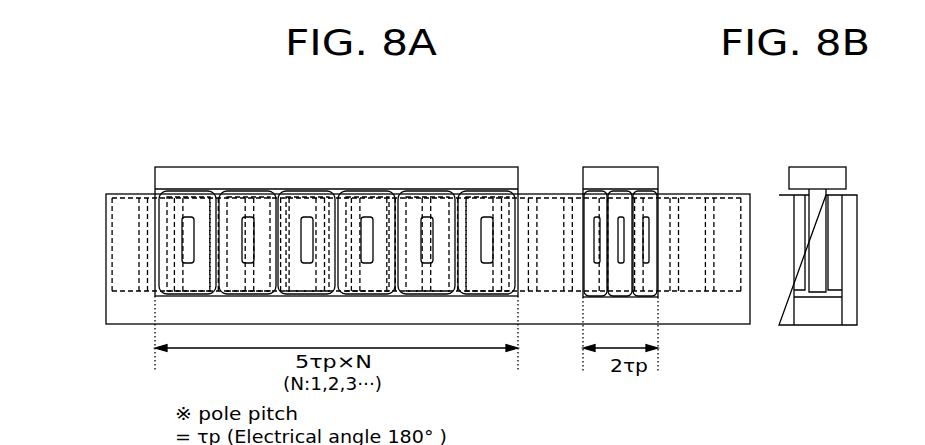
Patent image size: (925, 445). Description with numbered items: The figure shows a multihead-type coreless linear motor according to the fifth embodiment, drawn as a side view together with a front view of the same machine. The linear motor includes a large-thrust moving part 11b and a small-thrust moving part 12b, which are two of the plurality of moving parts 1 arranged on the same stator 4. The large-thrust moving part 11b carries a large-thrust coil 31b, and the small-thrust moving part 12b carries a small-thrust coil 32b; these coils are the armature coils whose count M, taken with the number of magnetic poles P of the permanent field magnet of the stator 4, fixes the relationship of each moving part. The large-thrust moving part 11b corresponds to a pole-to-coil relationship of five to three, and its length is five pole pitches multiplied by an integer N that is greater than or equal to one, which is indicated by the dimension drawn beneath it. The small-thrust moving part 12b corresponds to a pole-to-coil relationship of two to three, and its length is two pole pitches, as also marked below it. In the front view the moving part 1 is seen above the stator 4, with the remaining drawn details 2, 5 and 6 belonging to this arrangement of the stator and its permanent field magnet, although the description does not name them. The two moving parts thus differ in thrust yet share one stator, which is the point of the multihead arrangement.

In FIG. 8B, the moving part 1 is at (818, 200).
In FIG. 8B, the armature core back 2 is at (838, 187).
In FIG. 8B, the stator 4 is at (813, 314).
In FIG. 8A, the field 5 is at (733, 313).
In FIG. 8A, the permanent magnet 6 is at (724, 208).
In FIG. 8A, the large-thrust moving part 11b is at (213, 167).
In FIG. 8A, the small-thrust moving part 12b is at (600, 177).
In FIG. 8A, the large-thrust coil 31b is at (300, 167).
In FIG. 8A, the small-thrust coil 32b is at (637, 193).